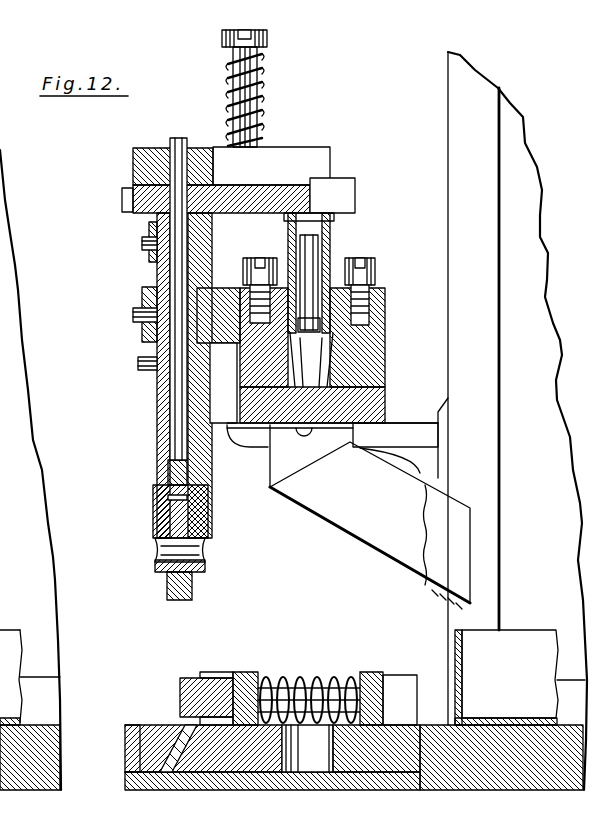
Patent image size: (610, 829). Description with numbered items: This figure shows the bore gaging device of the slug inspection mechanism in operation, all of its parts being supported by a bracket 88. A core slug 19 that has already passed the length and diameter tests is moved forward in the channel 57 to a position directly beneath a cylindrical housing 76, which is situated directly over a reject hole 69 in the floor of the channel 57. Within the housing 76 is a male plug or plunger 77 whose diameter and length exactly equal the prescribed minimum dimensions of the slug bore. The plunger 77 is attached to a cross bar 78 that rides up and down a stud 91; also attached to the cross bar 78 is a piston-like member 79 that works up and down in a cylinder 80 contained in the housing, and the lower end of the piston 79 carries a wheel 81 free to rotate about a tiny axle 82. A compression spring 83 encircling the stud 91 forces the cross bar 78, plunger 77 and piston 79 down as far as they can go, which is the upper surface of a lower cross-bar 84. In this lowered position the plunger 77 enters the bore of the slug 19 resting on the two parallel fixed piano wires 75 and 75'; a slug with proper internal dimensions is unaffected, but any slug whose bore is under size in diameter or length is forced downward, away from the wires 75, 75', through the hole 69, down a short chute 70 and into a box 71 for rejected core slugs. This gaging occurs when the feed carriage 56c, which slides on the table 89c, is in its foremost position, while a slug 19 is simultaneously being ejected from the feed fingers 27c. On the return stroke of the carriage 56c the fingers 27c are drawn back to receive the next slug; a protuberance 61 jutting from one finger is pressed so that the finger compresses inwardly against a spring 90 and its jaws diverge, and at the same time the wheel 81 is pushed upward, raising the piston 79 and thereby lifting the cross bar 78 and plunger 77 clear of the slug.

The core slug 19 is at (311, 360).
The feed fingers 27c is at (245, 690).
The feed carriage 56c is at (272, 748).
The channel 57 is at (345, 376).
The protuberance 61 is at (195, 686).
The reject hole 69 is at (352, 423).
The chute 70 is at (343, 518).
The box 71 is at (512, 645).
The piano wire 75 is at (264, 280).
The piano wire 75' is at (367, 282).
The cylindrical housing 76 is at (306, 232).
The plunger 77 is at (312, 258).
The cross bar 78 is at (330, 170).
The piston 79 is at (178, 148).
The cylinder 80 is at (150, 268).
The wheel 81 is at (190, 590).
The axle 82 is at (195, 549).
The compression spring 83 is at (262, 108).
The cross-bar 84 is at (340, 200).
The bracket 88 is at (452, 70).
The table 89c is at (137, 738).
The spring 90 is at (340, 680).
The stud 91 is at (258, 80).